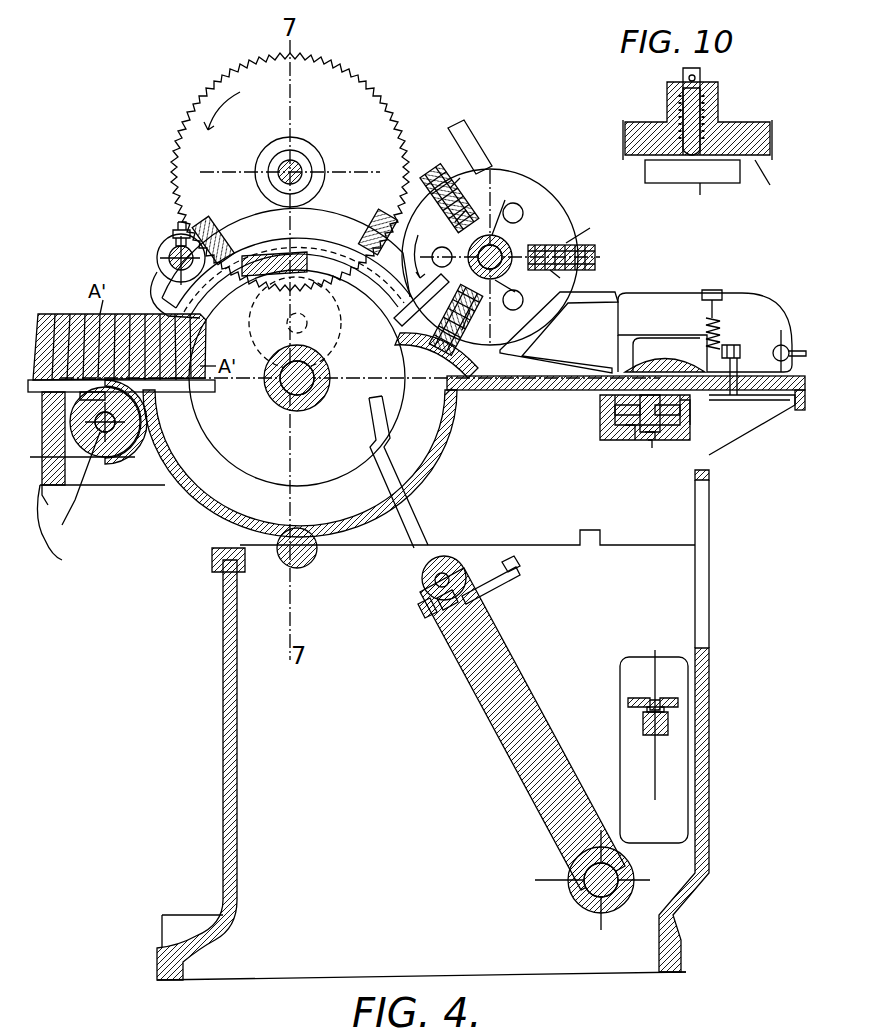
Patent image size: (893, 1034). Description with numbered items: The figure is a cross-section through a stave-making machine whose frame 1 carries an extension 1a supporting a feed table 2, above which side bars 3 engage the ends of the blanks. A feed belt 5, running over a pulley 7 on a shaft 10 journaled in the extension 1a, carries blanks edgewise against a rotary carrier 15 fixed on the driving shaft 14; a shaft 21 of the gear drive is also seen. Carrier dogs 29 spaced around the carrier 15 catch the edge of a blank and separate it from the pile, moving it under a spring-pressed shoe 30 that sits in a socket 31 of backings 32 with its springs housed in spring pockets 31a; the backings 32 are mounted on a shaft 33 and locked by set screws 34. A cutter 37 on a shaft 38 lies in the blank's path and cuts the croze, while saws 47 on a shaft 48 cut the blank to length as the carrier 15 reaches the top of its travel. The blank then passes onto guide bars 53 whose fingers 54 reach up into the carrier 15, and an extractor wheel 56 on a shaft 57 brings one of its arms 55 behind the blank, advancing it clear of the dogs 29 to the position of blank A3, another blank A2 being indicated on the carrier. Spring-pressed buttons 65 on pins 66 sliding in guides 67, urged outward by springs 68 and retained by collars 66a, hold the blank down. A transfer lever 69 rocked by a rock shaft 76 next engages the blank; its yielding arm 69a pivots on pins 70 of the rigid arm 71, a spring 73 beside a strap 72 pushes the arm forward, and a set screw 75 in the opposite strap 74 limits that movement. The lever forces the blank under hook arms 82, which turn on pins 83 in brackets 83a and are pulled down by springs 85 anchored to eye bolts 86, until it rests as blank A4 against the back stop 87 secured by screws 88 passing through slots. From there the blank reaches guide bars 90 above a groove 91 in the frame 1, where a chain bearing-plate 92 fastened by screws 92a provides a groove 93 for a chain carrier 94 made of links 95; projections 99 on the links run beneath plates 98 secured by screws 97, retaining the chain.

In FIG. 4, the frame 1 is at (222, 745).
In FIG. 4, the extension 1a is at (105, 478).
In FIG. 4, the feed table 2 is at (54, 525).
In FIG. 4, the side bars 3 is at (456, 549).
In FIG. 4, the feed belt 5 is at (44, 497).
In FIG. 4, the pulley 7 is at (118, 442).
In FIG. 4, the shaft 10 is at (75, 486).
In FIG. 4, the shaft 14 is at (268, 392).
In FIG. 4, the carrier 15 is at (297, 378).
In FIG. 4, the shaft 21 is at (288, 566).
In FIG. 4, the carrier dogs 29 is at (363, 472).
In FIG. 4, the spring-pressed shoe 30 is at (345, 240).
In FIG. 10, the spring-pressed shoe 30 is at (692, 187).
In FIG. 10, the socket 31 is at (774, 183).
In FIG. 4, the spring pockets 31a is at (385, 215).
In FIG. 10, the spring pockets 31a is at (712, 100).
In FIG. 4, the backings 32 is at (310, 222).
In FIG. 10, the backings 32 is at (770, 136).
In FIG. 4, the shaft 33 is at (156, 259).
In FIG. 4, the set screws 34 is at (172, 218).
In FIG. 4, the cutter 37 is at (245, 314).
In FIG. 4, the shaft 38 is at (300, 316).
In FIG. 4, the saws 47 is at (370, 98).
In FIG. 4, the shaft 48 is at (302, 164).
In FIG. 4, the guide bars 53 is at (440, 388).
In FIG. 4, the fingers 54 is at (398, 338).
In FIG. 4, the arms 55 is at (478, 148).
In FIG. 4, the extractor wheel 56 is at (560, 215).
In FIG. 4, the shaft 57 is at (504, 248).
In FIG. 4, the spring-pressed button 65 is at (438, 160).
In FIG. 4, the pins 66 is at (483, 317).
In FIG. 4, the collars 66a is at (520, 237).
In FIG. 4, the guides 67 is at (502, 253).
In FIG. 4, the springs 68 is at (531, 205).
In FIG. 4, the transfer lever 69 is at (420, 585).
In FIG. 4, the yielding arm 69a is at (414, 520).
In FIG. 4, the pins 70 is at (452, 572).
In FIG. 4, the rigid arm 71 is at (515, 688).
In FIG. 4, the strap 72 is at (425, 620).
In FIG. 4, the spring 73 is at (448, 612).
In FIG. 4, the strap 74 is at (512, 592).
In FIG. 4, the set screw 75 is at (512, 560).
In FIG. 4, the rock shaft 76 is at (575, 890).
In FIG. 4, the hook arms 82 is at (635, 298).
In FIG. 4, the pins 83 is at (787, 346).
In FIG. 4, the brackets 83a is at (790, 408).
In FIG. 4, the springs 85 is at (720, 320).
In FIG. 4, the eye bolts 86 is at (733, 390).
In FIG. 4, the back stop 87 is at (708, 290).
In FIG. 4, the screws 88 is at (738, 346).
In FIG. 4, the guide bars 90 is at (600, 405).
In FIG. 4, the groove 91 is at (630, 440).
In FIG. 4, the chain bearing-plate 92 is at (658, 440).
In FIG. 4, the screws 92a is at (648, 440).
In FIG. 4, the groove 93 is at (654, 448).
In FIG. 4, the chain carrier 94 is at (655, 737).
In FIG. 4, the links 95 is at (660, 698).
In FIG. 4, the screws 97 is at (690, 412).
In FIG. 4, the plates 98 is at (614, 410).
In FIG. 4, the projections 99 is at (618, 420).
In FIG. 4, the key A2 is at (262, 254).
In FIG. 4, the blank A3 is at (492, 390).
In FIG. 4, the blank A4 is at (628, 365).